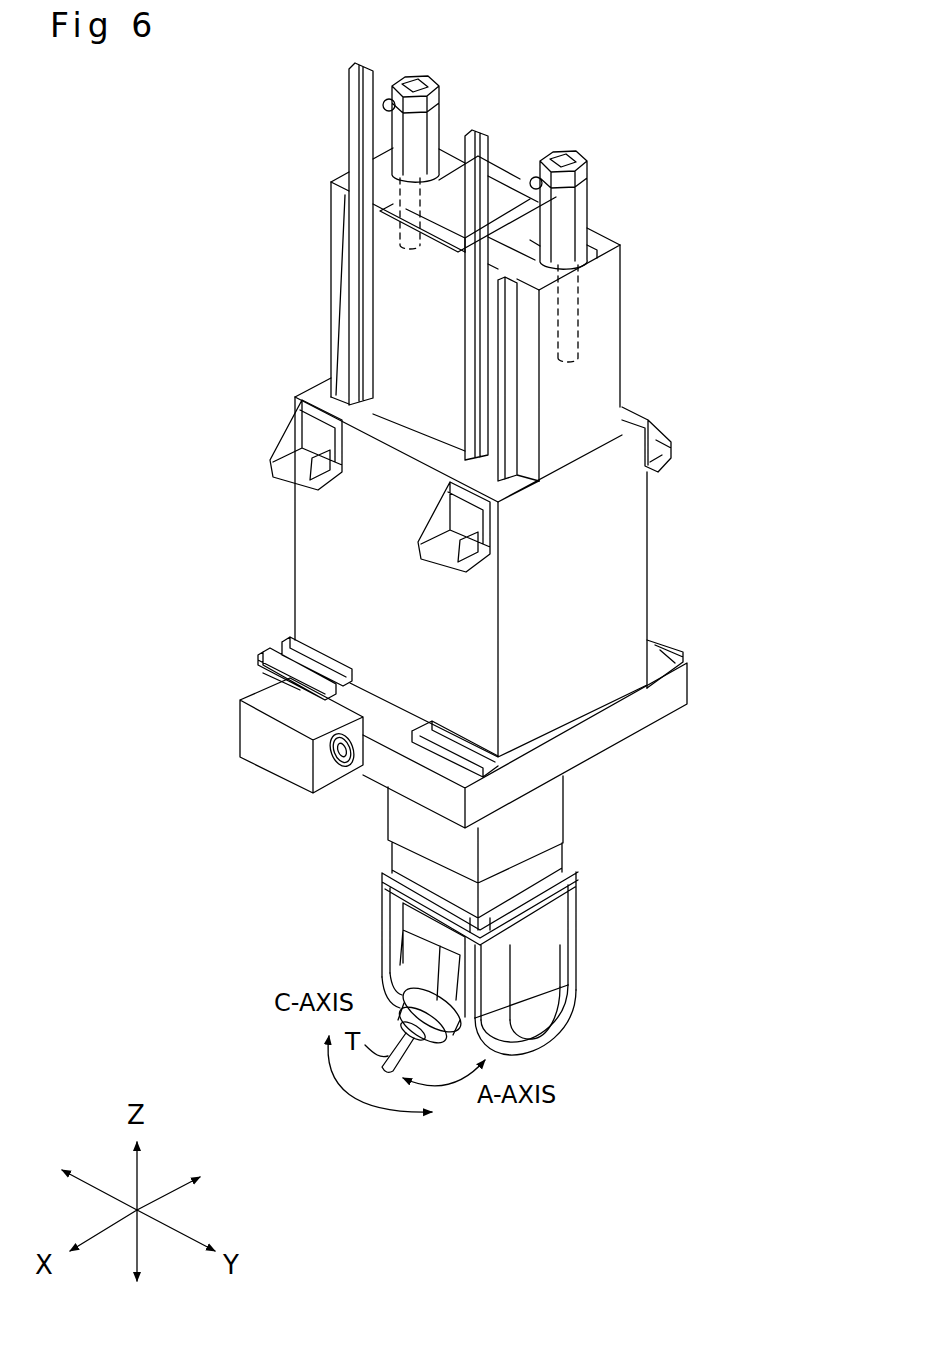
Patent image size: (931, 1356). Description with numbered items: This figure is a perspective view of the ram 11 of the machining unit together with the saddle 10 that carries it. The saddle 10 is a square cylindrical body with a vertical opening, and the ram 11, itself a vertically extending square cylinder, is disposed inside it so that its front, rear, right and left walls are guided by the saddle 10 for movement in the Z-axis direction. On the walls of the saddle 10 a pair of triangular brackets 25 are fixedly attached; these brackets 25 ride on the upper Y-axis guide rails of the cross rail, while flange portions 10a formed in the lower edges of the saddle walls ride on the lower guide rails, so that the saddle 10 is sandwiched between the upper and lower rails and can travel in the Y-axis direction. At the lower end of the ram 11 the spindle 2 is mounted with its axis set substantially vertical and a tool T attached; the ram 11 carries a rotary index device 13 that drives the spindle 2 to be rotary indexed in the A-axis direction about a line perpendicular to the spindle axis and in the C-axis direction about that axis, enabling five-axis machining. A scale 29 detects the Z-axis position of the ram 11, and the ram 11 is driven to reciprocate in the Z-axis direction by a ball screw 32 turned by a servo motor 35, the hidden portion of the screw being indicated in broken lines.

The spindle 2 is at (397, 1020).
The saddle 10 is at (652, 551).
The flange portion 10a is at (692, 685).
The ram 11 is at (570, 800).
The rotary index device 13 is at (587, 938).
The triangular bracket 25 is at (287, 437).
The scale 29 is at (350, 105).
The ball screw 32 is at (403, 250).
The servo motor 35 is at (440, 100).